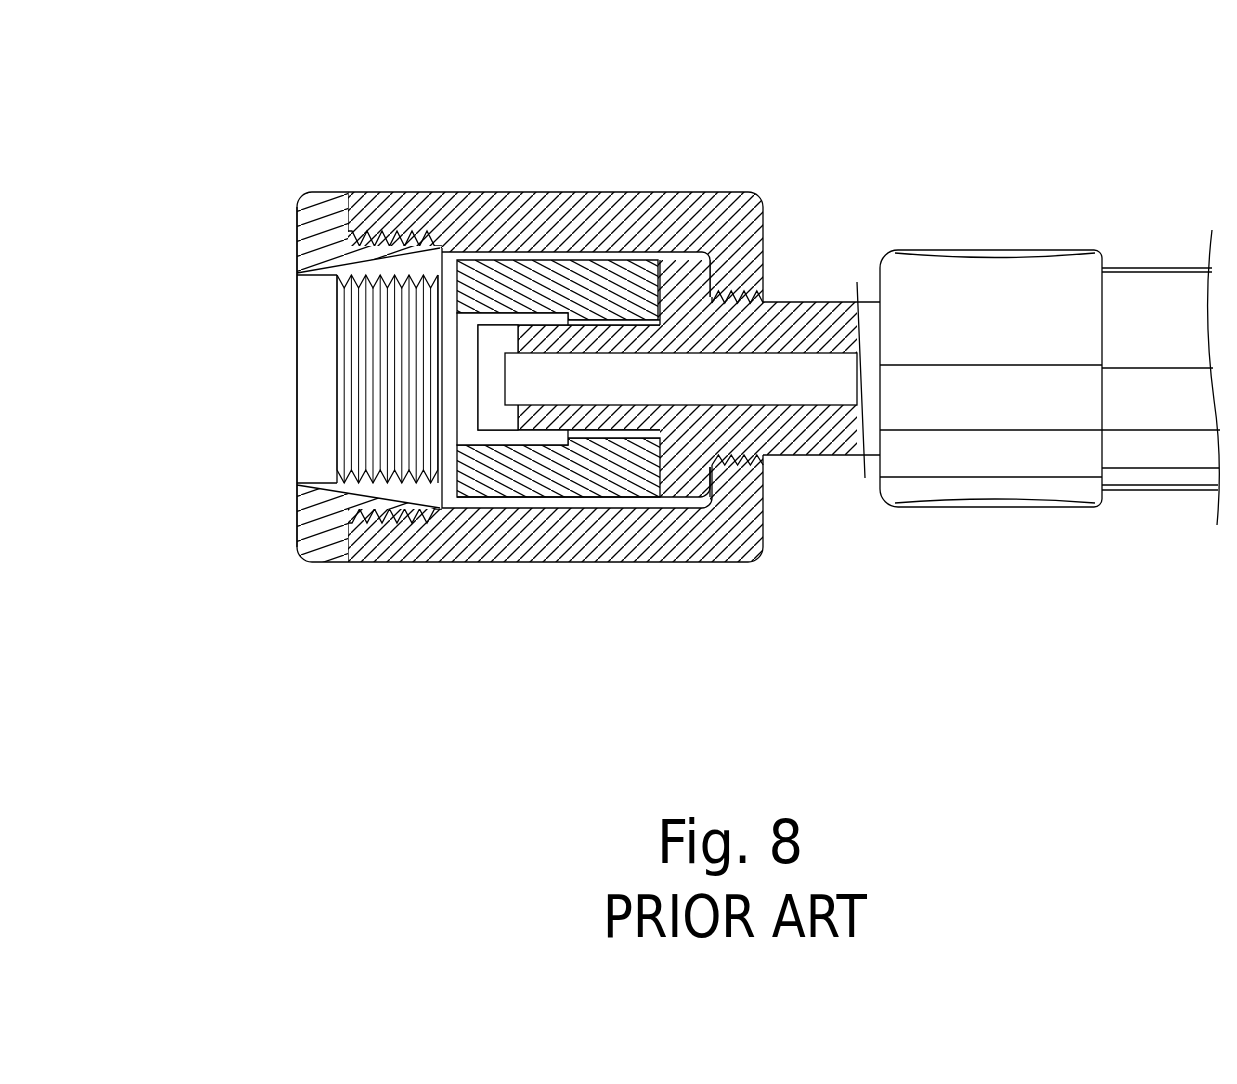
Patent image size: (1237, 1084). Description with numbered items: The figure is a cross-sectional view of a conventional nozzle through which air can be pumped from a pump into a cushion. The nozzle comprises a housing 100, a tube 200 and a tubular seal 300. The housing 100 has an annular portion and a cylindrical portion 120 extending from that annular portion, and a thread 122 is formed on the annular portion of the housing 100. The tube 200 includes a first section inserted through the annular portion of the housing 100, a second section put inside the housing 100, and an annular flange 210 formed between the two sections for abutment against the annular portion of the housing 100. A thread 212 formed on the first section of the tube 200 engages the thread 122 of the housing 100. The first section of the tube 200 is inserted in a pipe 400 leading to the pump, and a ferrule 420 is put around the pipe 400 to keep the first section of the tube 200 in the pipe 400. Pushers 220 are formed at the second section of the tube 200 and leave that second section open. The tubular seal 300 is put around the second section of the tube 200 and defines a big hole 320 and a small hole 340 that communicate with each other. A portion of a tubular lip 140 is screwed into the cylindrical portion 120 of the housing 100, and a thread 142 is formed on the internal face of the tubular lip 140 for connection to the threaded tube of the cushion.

The housing 100 is at (523, 185).
The cylindrical portion 120 is at (703, 225).
The thread 122 is at (722, 468).
The tubular lip 140 is at (317, 222).
The thread 142 is at (375, 330).
The tube 200 is at (790, 320).
The annular flange 210 is at (688, 480).
The thread 212 is at (770, 452).
The pushers 220 is at (497, 417).
The tubular seal 300 is at (483, 277).
The big hole 320 is at (468, 413).
The small hole 340 is at (630, 318).
The pipe 400 is at (1158, 285).
The ferrule 420 is at (1022, 497).